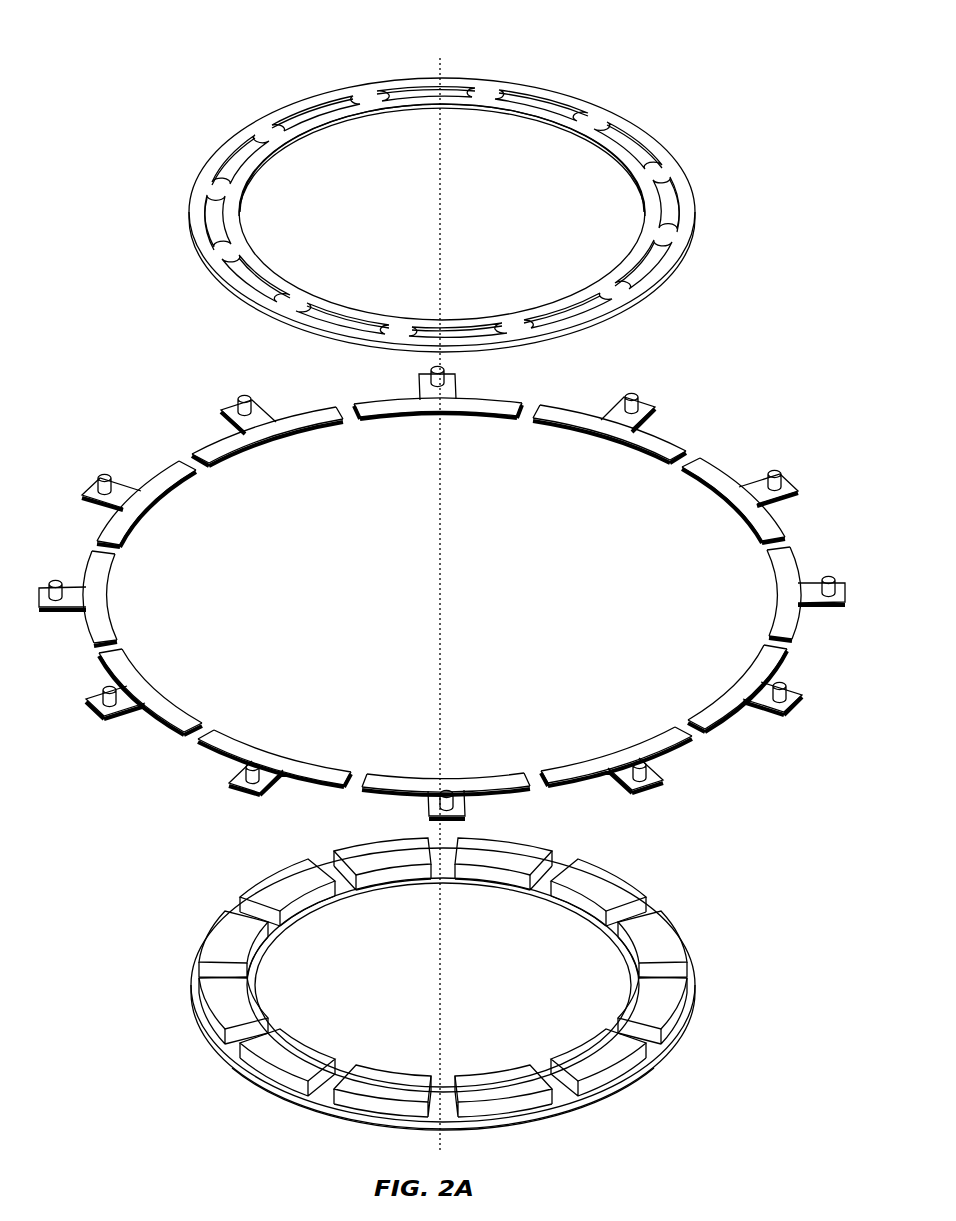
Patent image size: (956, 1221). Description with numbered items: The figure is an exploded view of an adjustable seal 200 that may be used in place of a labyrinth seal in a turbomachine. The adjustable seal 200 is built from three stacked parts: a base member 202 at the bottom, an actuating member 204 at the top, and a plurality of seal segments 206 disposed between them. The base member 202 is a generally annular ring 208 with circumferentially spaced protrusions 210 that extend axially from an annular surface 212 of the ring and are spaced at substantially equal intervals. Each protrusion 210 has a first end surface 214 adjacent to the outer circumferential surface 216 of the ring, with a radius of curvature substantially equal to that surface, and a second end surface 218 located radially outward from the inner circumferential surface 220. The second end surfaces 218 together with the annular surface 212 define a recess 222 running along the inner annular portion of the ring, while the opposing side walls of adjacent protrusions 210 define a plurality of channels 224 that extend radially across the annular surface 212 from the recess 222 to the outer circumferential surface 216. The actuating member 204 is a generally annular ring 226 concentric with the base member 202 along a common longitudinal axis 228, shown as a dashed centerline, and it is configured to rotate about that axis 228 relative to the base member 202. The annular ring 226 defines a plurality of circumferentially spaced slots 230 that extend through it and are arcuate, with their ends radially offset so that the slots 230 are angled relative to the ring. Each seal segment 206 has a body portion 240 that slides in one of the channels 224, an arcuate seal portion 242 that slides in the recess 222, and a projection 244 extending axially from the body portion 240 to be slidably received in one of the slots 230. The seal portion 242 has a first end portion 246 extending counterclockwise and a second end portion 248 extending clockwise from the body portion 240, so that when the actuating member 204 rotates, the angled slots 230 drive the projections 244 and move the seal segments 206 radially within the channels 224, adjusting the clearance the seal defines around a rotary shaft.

The adjustable seal 200 is at (166, 98).
The base member 202 is at (176, 1043).
The actuating member 204 is at (179, 212).
The seal segments 206 is at (201, 413).
The annular ring 208 is at (201, 930).
The protrusions 210 is at (301, 872).
The annular surface 212 is at (326, 1112).
The first end surface 214 is at (244, 905).
The outer circumferential surface 216 is at (521, 1122).
The second end surface 218 is at (296, 910).
The inner circumferential surface 220 is at (601, 937).
The recess 222 is at (324, 905).
The channels 224 is at (267, 932).
The annular ring 226 is at (284, 112).
The common axis 228 is at (438, 213).
The slots 230 is at (322, 112).
The body portion 240 is at (269, 410).
The seal portion 242 is at (273, 443).
The projection 244 is at (244, 400).
The first end portion 246 is at (219, 464).
The second end portion 248 is at (346, 426).